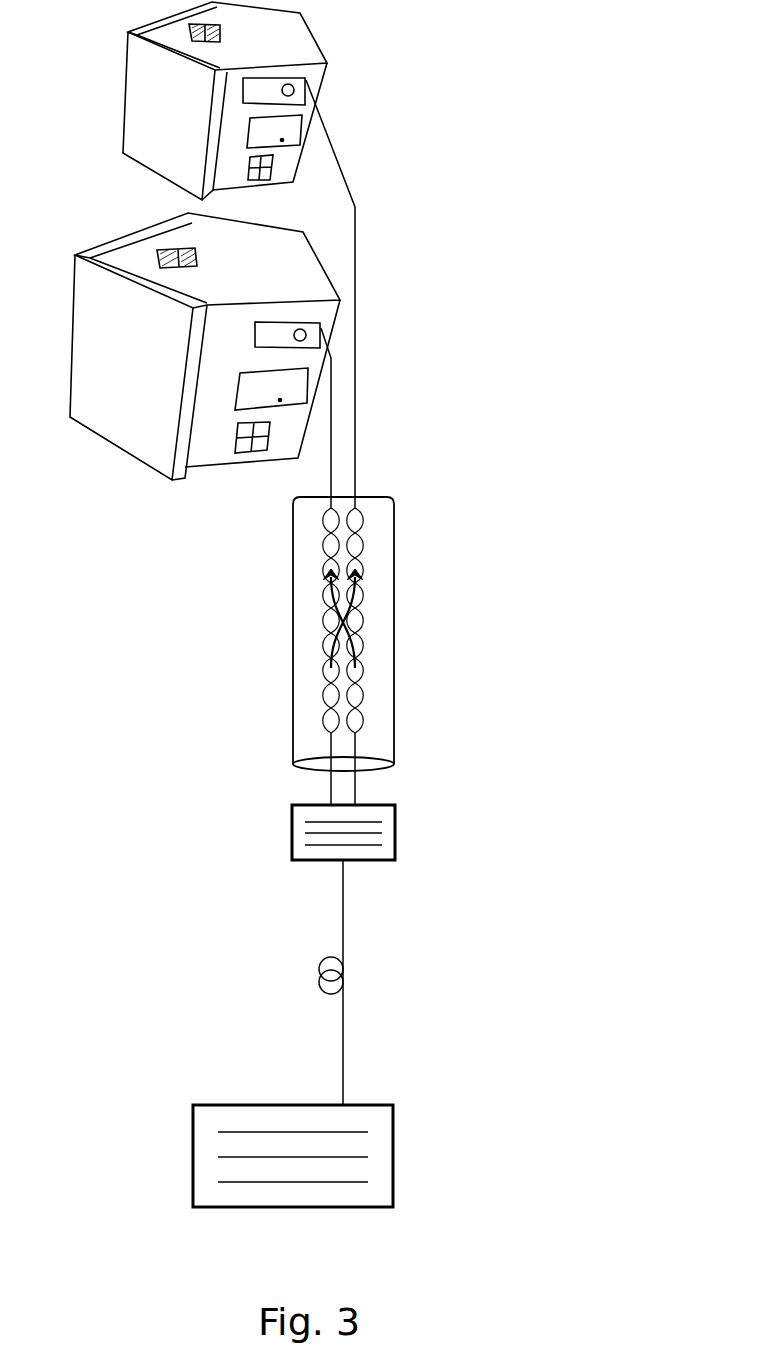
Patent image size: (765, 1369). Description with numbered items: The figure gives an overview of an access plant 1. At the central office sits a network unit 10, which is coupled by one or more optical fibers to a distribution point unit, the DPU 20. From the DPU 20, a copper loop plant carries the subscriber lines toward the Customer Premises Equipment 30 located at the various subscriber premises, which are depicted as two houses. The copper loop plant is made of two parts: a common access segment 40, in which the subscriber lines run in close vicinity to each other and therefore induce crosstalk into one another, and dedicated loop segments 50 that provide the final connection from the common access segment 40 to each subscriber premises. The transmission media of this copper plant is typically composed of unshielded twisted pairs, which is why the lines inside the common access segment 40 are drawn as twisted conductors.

The access plant 1 is at (484, 432).
The network unit 10 is at (192, 1209).
The DPU 20 is at (293, 861).
The Customer Premises Equipment 30 is at (243, 95).
The common access segment 40 is at (397, 637).
The dedicated loop segments 50 is at (330, 488).